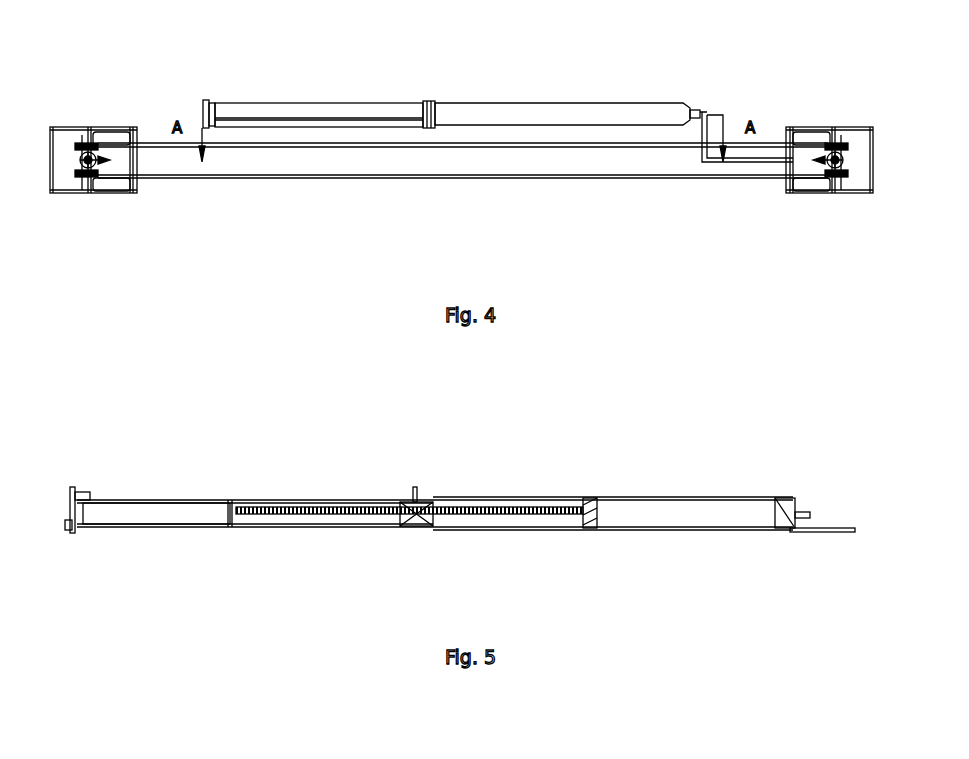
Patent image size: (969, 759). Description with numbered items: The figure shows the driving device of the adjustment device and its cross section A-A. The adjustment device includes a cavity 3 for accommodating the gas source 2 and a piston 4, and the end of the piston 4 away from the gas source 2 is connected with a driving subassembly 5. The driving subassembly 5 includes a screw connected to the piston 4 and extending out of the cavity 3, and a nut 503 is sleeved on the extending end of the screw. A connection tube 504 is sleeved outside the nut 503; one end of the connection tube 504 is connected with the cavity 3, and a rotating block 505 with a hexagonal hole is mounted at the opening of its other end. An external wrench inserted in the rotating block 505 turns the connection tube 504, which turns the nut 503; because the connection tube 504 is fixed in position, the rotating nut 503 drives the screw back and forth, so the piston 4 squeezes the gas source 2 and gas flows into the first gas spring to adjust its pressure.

In FIG. 4, the driving subassembly 5 is at (275, 100).
In FIG. 5, the driving subassembly 5 is at (460, 479).
In FIG. 5, the rotating block 505 is at (67, 502).
In FIG. 5, the connection tube 504 is at (95, 498).
In FIG. 5, the nut 503 is at (240, 500).
In FIG. 5, the piston 4 is at (597, 500).
In FIG. 5, the gas source 2 is at (650, 515).
In FIG. 5, the cavity 3 is at (737, 500).